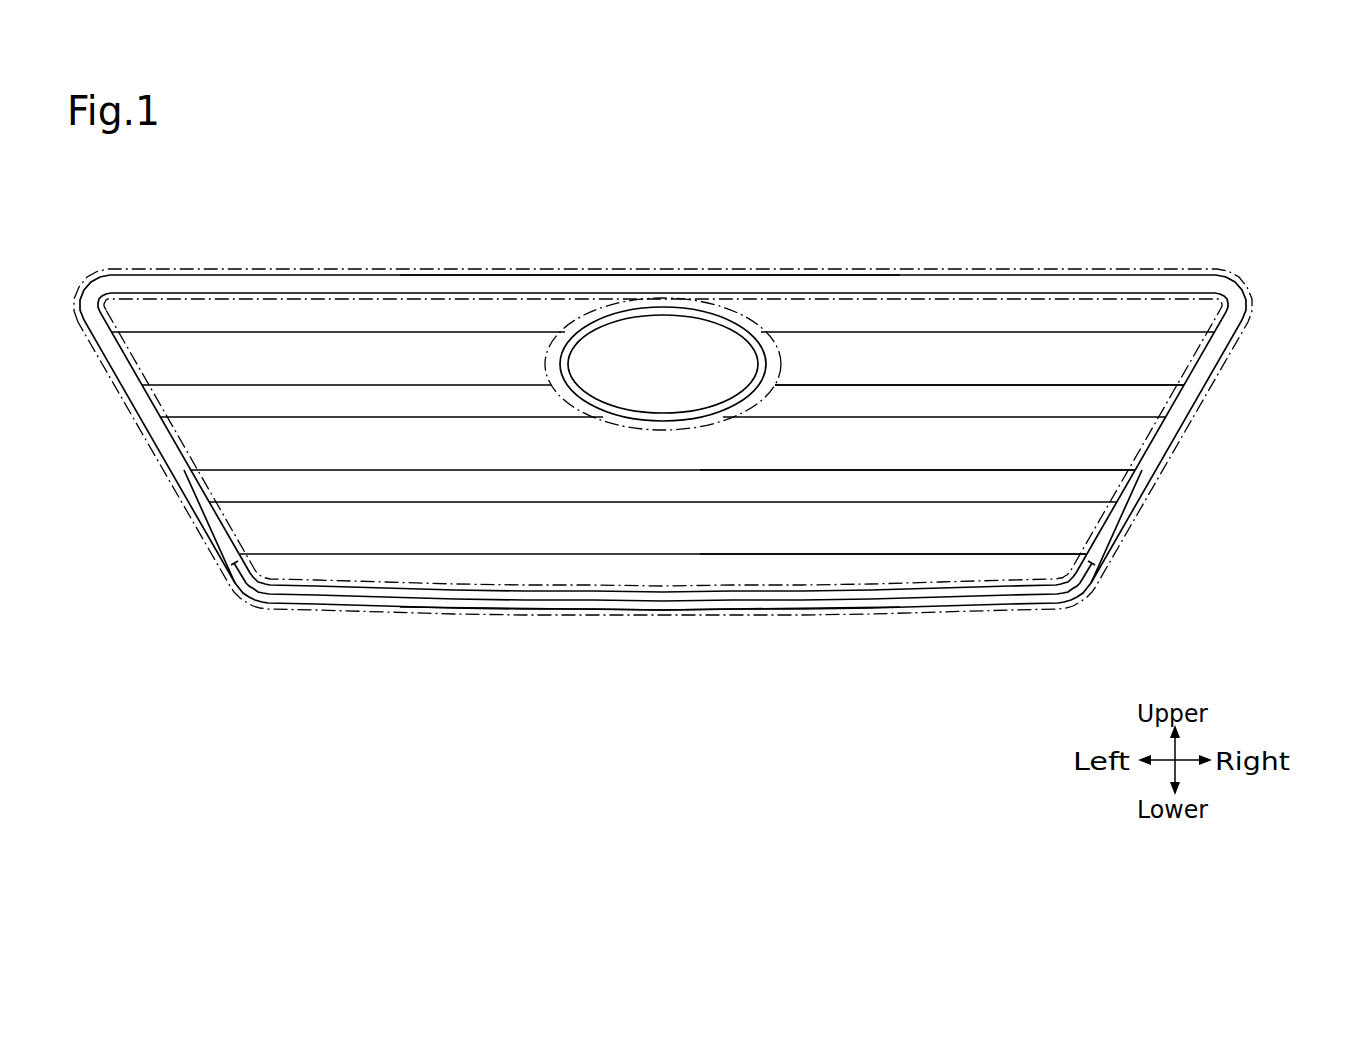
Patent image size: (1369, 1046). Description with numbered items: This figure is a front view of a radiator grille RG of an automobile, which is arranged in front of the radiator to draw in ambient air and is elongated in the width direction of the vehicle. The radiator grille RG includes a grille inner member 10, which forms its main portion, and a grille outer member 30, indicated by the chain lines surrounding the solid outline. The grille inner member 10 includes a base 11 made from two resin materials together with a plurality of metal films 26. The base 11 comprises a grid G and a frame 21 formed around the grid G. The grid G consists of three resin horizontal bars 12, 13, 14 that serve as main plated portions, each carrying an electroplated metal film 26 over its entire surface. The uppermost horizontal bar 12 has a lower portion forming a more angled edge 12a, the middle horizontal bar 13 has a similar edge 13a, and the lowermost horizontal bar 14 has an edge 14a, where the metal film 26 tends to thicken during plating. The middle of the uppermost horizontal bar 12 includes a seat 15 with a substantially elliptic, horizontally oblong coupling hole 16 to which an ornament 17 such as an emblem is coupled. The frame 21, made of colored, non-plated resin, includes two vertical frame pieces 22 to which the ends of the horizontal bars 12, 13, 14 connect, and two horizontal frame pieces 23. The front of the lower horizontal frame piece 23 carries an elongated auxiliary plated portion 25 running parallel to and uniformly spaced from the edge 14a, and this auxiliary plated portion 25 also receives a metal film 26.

The radiator grille RG is at (272, 207).
The grille inner member 10 is at (198, 273).
The grille outer member 30 is at (290, 273).
The base 11 is at (717, 464).
The frame 21 is at (1235, 342).
The vertical frame pieces 22 is at (207, 518).
The horizontal frame pieces 23 is at (660, 294).
The auxiliary plated portion 25 is at (795, 602).
The metal film 26 is at (193, 443).
The grid G is at (1327, 388).
The uppermost horizontal bar 12 is at (1172, 362).
The edge of uppermost horizontal bar 12a is at (930, 377).
The middle horizontal bar 13 is at (1133, 440).
The edge of middle horizontal bar 13a is at (930, 463).
The lowermost horizontal bar 14 is at (1087, 526).
The edge of lowermost horizontal bar 14a is at (897, 545).
The seat 15 is at (670, 420).
The coupling hole 16 is at (566, 372).
The ornament 17 is at (782, 362).